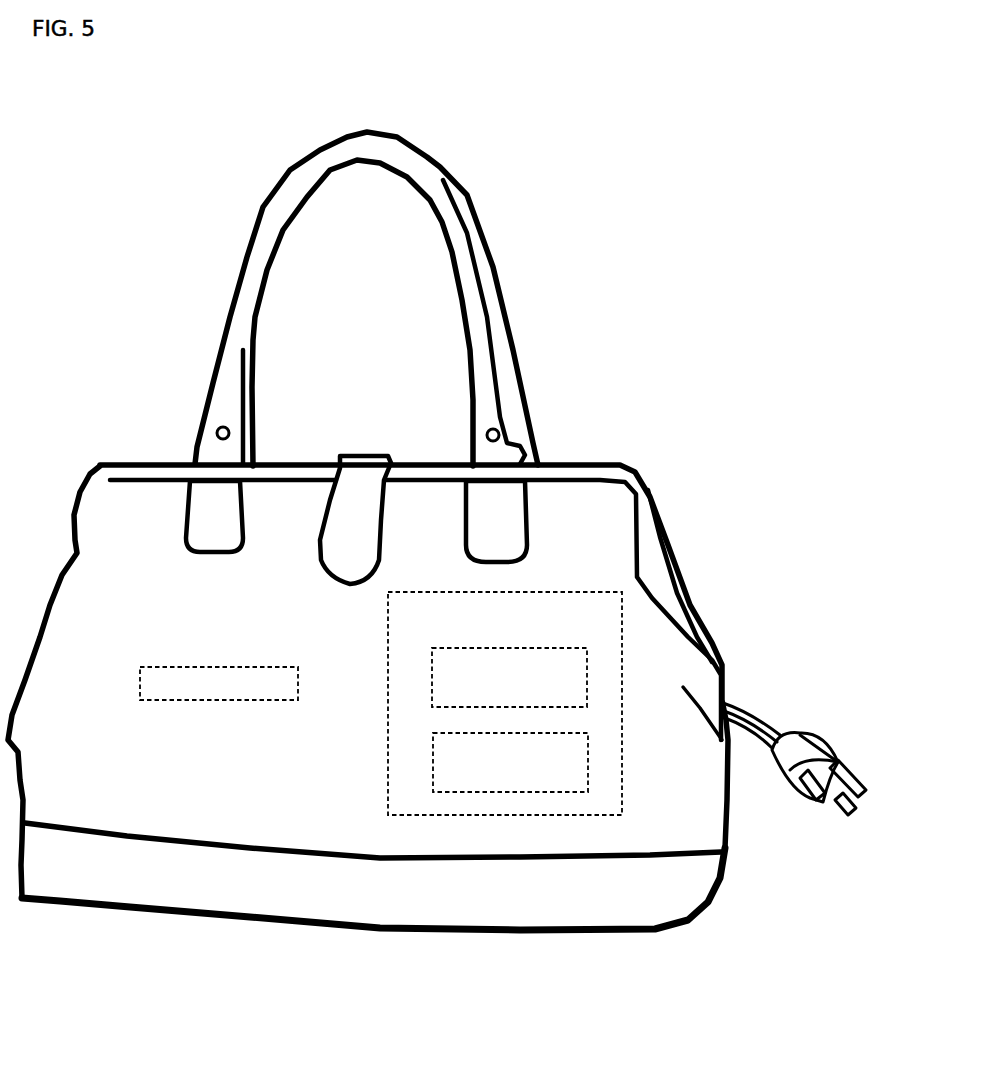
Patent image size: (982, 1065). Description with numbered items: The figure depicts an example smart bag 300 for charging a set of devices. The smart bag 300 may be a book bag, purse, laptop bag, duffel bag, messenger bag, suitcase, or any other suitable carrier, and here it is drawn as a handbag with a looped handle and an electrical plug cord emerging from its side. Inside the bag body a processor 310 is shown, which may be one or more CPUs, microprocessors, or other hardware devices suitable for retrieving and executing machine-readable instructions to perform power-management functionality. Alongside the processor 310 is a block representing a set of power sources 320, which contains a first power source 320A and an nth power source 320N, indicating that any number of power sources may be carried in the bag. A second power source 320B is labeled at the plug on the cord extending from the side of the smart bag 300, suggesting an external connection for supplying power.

The smart bag 300 is at (157, 378).
The processor 310 is at (219, 683).
The power sources 320 is at (505, 703).
The first power source 320A is at (509, 677).
The nth power source 320N is at (510, 762).
The second power source 320B is at (847, 720).